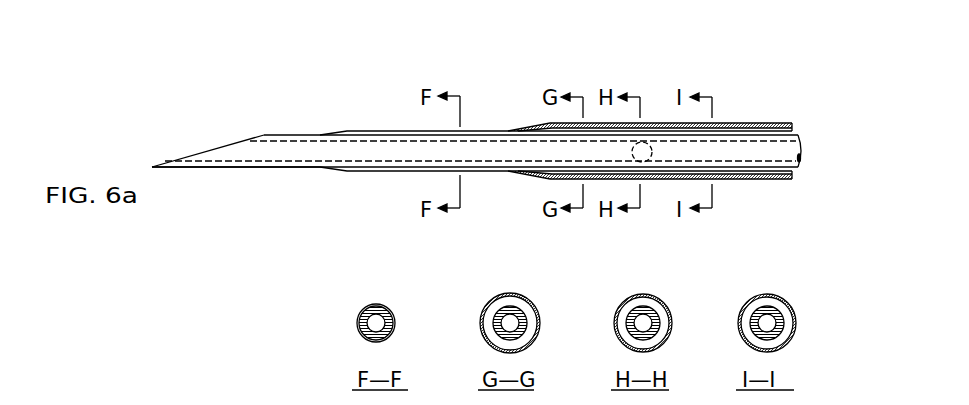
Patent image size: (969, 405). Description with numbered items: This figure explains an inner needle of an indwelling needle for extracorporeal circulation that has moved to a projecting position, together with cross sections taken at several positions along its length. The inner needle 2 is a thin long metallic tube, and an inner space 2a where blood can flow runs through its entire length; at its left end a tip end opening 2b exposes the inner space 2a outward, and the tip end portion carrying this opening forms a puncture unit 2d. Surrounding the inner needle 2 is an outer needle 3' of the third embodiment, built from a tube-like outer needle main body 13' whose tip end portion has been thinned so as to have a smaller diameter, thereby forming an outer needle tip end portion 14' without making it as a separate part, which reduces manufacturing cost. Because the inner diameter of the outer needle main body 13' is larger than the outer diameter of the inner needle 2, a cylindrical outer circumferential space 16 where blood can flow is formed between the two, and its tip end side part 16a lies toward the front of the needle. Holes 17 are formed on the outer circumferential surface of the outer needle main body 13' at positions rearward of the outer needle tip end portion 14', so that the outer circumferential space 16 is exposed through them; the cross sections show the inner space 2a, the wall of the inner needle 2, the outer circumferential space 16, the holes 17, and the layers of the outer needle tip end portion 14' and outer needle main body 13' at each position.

The inner needle 2 is at (375, 157).
The inner space 2a is at (377, 322).
The tip end opening 2b is at (215, 148).
The puncture unit 2d is at (243, 151).
The outer needle 3' is at (380, 75).
The outer needle main body 13' is at (614, 197).
The outer needle tip end portion 14' is at (537, 192).
The outer circumferential space 16 is at (781, 131).
The tip end side part of outer circumferential space 16a is at (793, 172).
The holes 17 is at (644, 144).